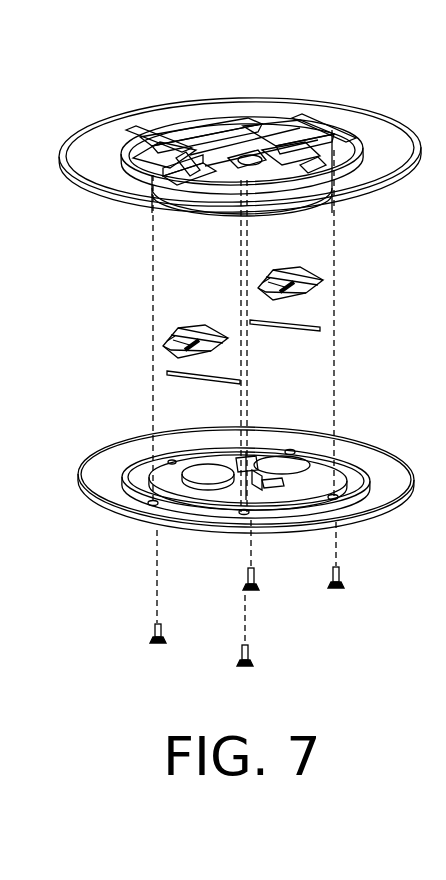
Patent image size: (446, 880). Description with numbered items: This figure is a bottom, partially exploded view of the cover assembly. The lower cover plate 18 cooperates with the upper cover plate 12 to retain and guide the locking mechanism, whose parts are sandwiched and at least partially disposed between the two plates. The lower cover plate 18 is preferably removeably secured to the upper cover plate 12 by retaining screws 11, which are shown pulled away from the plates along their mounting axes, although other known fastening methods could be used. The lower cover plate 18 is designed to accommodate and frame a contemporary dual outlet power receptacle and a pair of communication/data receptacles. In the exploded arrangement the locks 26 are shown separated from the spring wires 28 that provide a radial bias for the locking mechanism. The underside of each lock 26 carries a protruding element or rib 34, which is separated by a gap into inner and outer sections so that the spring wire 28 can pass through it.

The retaining screws 11 is at (249, 648).
The upper cover plate 12 is at (132, 117).
The lower cover plate 18 is at (80, 466).
The lock 26 is at (302, 272).
The spring wire 28 is at (318, 322).
The rib 34 is at (168, 333).